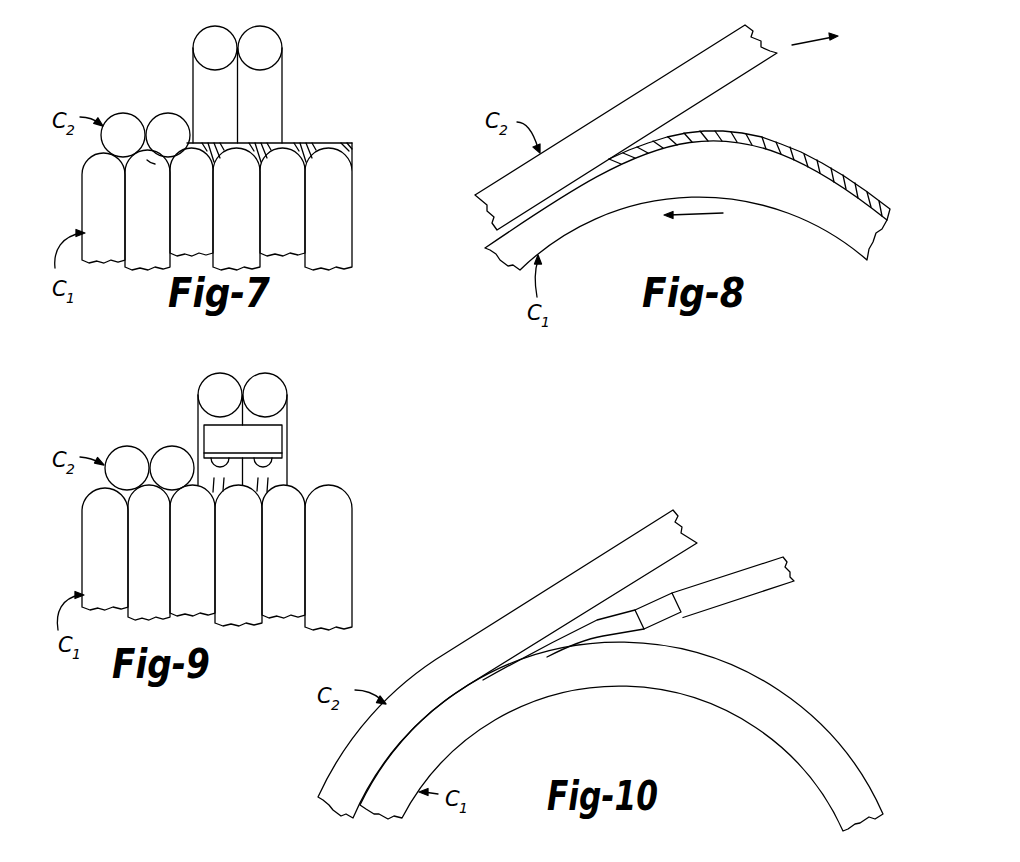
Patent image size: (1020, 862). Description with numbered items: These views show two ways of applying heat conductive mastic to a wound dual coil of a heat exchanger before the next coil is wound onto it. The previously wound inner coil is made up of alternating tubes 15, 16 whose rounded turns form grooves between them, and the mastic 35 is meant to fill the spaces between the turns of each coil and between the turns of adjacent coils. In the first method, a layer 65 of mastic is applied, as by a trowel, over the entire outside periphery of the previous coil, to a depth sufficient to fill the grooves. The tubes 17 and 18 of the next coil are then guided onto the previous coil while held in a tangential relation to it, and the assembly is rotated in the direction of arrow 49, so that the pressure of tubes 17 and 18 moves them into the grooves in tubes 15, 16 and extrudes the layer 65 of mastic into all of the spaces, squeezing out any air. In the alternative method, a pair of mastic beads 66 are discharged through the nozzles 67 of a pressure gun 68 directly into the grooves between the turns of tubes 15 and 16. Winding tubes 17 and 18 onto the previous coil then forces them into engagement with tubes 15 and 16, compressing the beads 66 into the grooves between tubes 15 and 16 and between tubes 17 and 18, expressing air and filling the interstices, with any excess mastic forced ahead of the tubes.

In FIG. 7, the tube 15 is at (89, 231).
In FIG. 8, the tube 15 is at (565, 236).
In FIG. 9, the tube 15 is at (89, 561).
In FIG. 10, the tube 15 is at (488, 724).
In FIG. 7, the tube 16 is at (135, 231).
In FIG. 9, the tube 16 is at (135, 561).
In FIG. 7, the tube 17 is at (197, 37).
In FIG. 8, the tube 17 is at (697, 54).
In FIG. 9, the tube 17 is at (204, 380).
In FIG. 10, the tube 17 is at (590, 562).
In FIG. 7, the tube 18 is at (278, 33).
In FIG. 9, the tube 18 is at (284, 385).
In FIG. 7, the mastic 35 is at (156, 165).
In FIG. 8, the arrow 49 is at (716, 213).
In FIG. 7, the layer of mastic 65 is at (317, 143).
In FIG. 8, the layer of mastic 65 is at (773, 143).
In FIG. 9, the mastic beads 66 is at (212, 486).
In FIG. 10, the mastic beads 66 is at (620, 634).
In FIG. 9, the nozzles 67 is at (220, 461).
In FIG. 10, the nozzles 67 is at (655, 601).
In FIG. 9, the pressure gun 68 is at (282, 440).
In FIG. 10, the pressure gun 68 is at (773, 589).